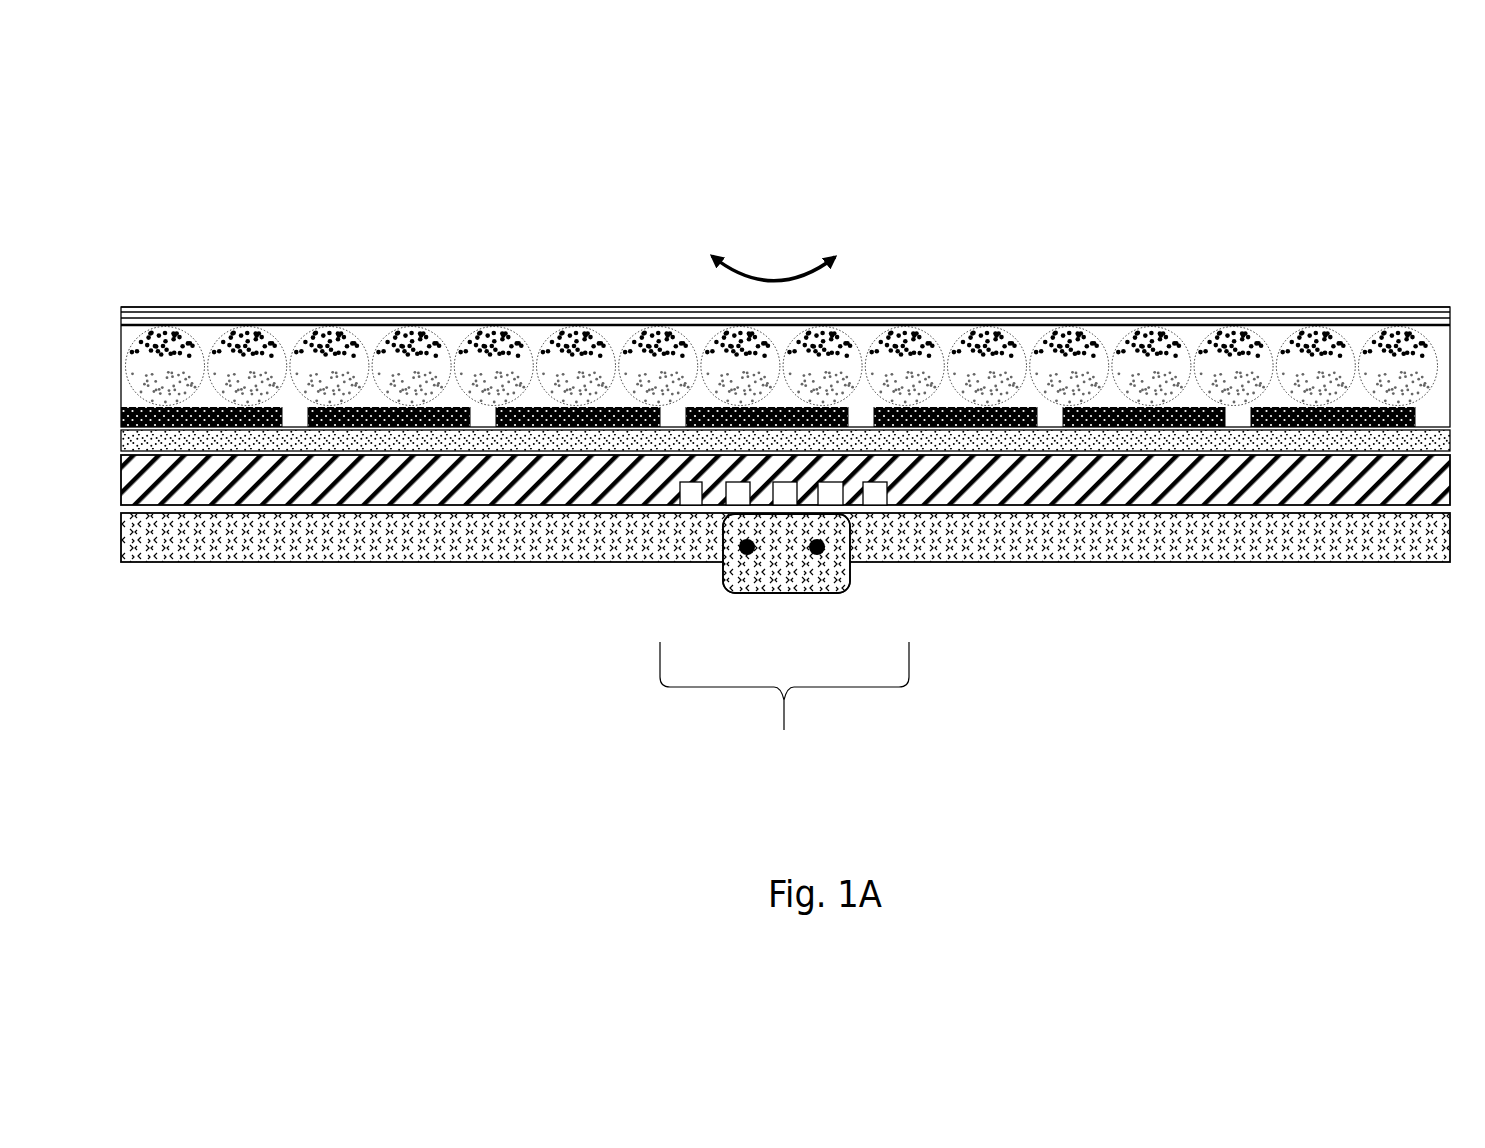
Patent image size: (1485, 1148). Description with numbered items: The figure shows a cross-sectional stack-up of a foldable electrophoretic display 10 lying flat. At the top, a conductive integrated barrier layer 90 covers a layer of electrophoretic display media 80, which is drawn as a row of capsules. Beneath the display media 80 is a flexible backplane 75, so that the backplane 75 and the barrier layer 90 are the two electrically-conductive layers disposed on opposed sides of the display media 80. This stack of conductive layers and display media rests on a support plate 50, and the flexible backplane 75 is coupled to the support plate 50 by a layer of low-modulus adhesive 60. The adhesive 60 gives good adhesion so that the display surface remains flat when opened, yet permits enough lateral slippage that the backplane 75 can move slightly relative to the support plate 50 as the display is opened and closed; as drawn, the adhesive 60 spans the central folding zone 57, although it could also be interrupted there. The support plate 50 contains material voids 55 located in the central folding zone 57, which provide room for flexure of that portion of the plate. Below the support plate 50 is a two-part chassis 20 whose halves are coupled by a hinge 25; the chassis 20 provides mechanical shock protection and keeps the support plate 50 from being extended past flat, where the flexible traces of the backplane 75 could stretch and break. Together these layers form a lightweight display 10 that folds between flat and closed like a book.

The foldable display 10 is at (333, 130).
The chassis 20 is at (209, 537).
The hinge 25 is at (735, 570).
The support plate 50 is at (410, 473).
The material voids 55 is at (873, 492).
The central folding zone 57 is at (784, 714).
The low-modulus adhesive 60 is at (348, 440).
The flexible backplane 75 is at (535, 407).
The electrophoretic display media 80 is at (1110, 345).
The conductive integrated barrier layer 90 is at (1285, 316).